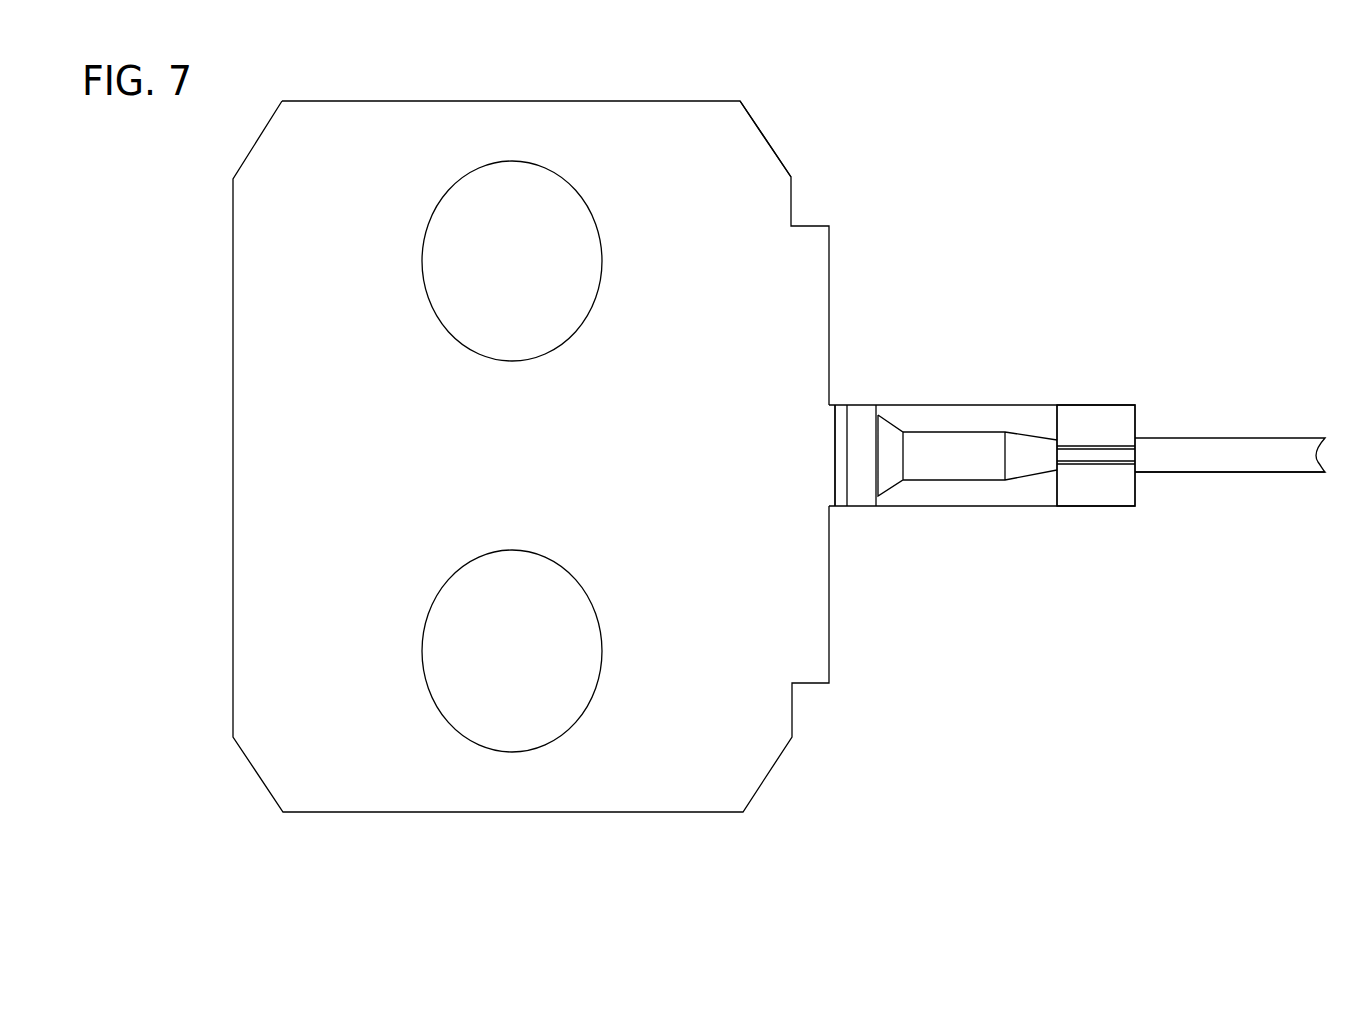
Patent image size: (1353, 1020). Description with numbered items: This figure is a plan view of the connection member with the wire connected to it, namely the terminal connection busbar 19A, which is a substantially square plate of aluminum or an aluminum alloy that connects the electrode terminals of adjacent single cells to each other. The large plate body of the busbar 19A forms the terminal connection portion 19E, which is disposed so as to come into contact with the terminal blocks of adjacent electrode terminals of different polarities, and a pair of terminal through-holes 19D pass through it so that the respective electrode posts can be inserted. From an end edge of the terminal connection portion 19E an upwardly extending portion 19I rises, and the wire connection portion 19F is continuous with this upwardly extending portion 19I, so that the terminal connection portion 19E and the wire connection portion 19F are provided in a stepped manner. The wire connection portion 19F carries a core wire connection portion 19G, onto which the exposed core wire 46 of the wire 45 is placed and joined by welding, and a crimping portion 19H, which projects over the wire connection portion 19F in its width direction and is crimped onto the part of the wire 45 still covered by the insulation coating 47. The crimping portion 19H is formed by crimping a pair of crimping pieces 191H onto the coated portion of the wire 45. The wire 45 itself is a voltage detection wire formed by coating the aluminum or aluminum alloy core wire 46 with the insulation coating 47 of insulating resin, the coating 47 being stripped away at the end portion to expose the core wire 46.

The terminal connection busbar 19A is at (637, 112).
The terminal through-hole 19D is at (580, 192).
The terminal connection portion 19E is at (733, 149).
The wire connection portion 19F is at (968, 578).
The core wire connection portion 19G is at (943, 482).
The crimping portion 19H is at (1085, 506).
The upwardly extending portion 19I is at (840, 442).
The crimping piece 191H is at (1108, 490).
The core wire 46 is at (952, 430).
The wire 45 is at (1228, 437).
The insulation coating 47 is at (1253, 472).